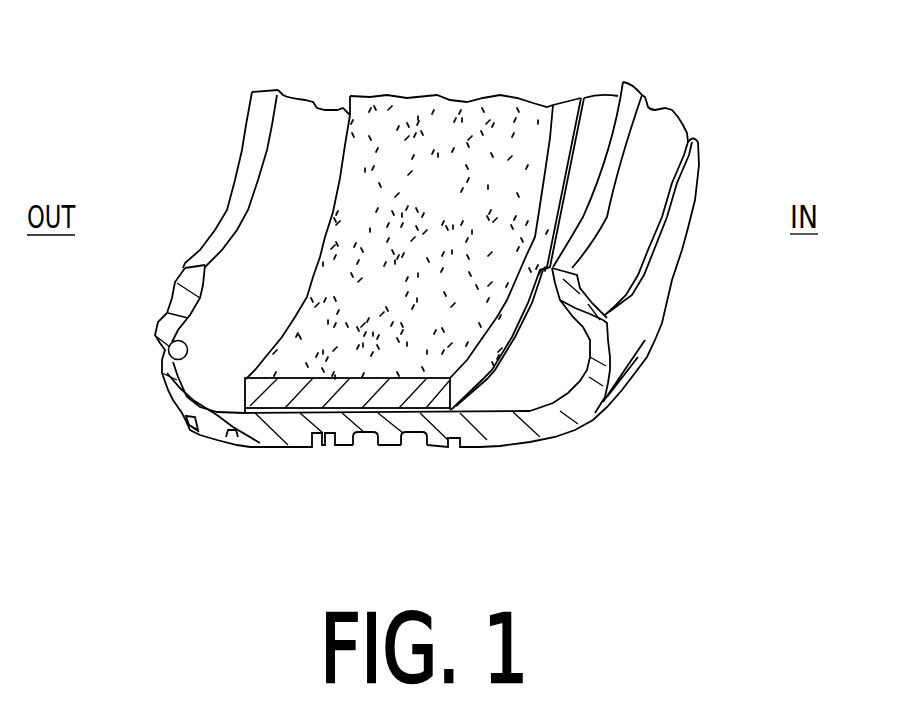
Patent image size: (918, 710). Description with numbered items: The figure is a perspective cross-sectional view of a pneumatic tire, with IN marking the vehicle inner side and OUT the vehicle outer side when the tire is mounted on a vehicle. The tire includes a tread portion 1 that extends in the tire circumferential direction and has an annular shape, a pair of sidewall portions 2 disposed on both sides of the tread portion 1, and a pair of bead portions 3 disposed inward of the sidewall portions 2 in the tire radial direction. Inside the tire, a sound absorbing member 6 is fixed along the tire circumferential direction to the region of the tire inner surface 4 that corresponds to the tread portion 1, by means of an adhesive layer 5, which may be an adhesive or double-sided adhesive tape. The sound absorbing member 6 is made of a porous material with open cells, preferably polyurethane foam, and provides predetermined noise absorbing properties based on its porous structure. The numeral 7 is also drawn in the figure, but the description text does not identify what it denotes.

The tread portion 1 is at (345, 447).
The sidewall portion 2 is at (160, 378).
The bead portion 3 is at (173, 290).
The tire inner surface 4 is at (160, 347).
The adhesive layer 5 is at (401, 446).
The sound absorbing member 6 is at (443, 142).
The sealant layer 7 is at (310, 163).